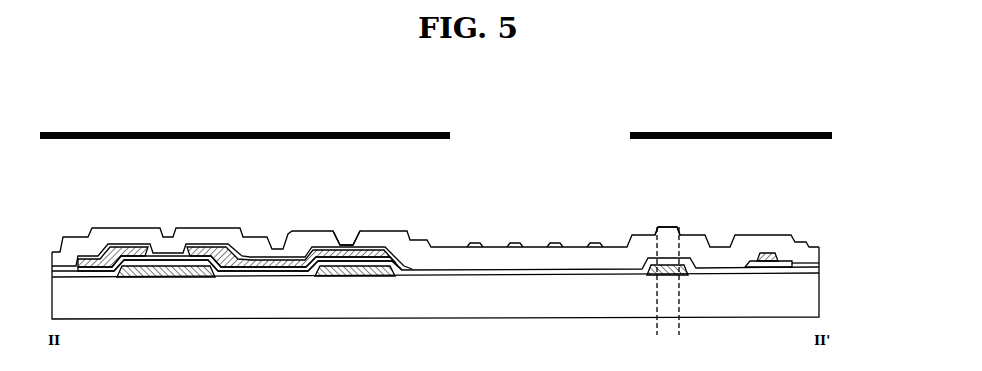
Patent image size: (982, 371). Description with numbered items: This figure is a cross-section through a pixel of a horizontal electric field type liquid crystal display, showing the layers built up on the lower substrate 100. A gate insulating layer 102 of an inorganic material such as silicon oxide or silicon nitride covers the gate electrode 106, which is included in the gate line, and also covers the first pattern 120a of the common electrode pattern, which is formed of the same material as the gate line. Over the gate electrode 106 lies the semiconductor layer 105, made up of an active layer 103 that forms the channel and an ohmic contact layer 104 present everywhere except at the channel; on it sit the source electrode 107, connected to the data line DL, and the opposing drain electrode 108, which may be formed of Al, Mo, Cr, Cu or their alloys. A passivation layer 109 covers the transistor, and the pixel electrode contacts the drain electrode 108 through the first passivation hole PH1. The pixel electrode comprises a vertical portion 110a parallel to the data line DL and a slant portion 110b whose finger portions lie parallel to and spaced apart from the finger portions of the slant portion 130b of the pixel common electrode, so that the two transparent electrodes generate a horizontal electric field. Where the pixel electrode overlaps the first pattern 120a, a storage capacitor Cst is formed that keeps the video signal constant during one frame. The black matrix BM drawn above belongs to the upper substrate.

The lower substrate 100 is at (819, 298).
The gate insulating layer 102 is at (817, 272).
The active layer 103 is at (795, 263).
The ohmic contact layer 104 is at (792, 258).
The semiconductor layer 105 is at (862, 239).
The gate electrode 106 is at (155, 278).
The source electrode 107 is at (122, 247).
The drain electrode 108 is at (205, 247).
The passivation layer 109 is at (800, 234).
The vertical portion 110a is at (663, 226).
The slant portion 110b is at (399, 231).
The first pattern 120a is at (350, 277).
The slant portion 130b is at (515, 221).
The first passivation hole PH1 is at (352, 224).
The data line DL is at (770, 253).
The black matrix BM is at (833, 135).
The storage capacitor Cst is at (679, 331).